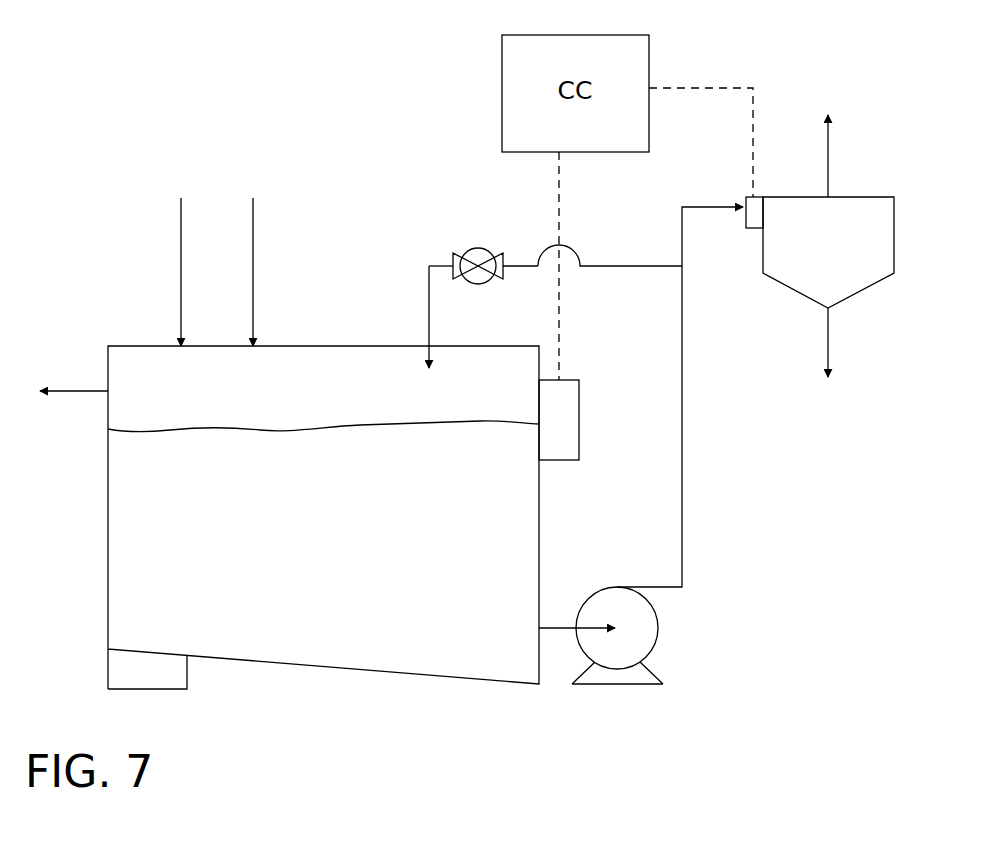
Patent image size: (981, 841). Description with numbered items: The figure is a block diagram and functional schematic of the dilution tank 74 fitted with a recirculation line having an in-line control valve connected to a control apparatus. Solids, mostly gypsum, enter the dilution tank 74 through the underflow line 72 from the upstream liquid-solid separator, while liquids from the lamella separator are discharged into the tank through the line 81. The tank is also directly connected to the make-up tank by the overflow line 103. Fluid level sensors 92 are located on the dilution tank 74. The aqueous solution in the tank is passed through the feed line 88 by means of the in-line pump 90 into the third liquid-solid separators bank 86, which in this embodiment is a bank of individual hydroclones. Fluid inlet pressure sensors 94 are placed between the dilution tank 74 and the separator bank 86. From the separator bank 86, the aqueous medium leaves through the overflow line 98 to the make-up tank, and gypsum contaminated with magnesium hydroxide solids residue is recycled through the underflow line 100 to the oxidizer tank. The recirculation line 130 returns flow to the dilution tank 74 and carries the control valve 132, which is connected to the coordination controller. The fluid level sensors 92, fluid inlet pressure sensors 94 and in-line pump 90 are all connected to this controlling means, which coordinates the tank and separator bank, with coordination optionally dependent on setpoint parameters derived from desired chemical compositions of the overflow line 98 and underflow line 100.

The dilution tank 74 is at (273, 646).
The line 81 is at (181, 257).
The underflow line 72 is at (253, 252).
The overflow line 103 is at (72, 391).
The control valve 132 is at (472, 250).
The recirculation line 130 is at (642, 266).
The fluid level sensors 92 is at (579, 410).
The feed line 88 is at (682, 473).
The in-line pump 90 is at (655, 667).
The fluid inlet pressure sensors 94 is at (750, 197).
The liquid-solid separators bank 86 is at (785, 274).
The overflow line 98 is at (828, 165).
The underflow line 100 is at (828, 333).